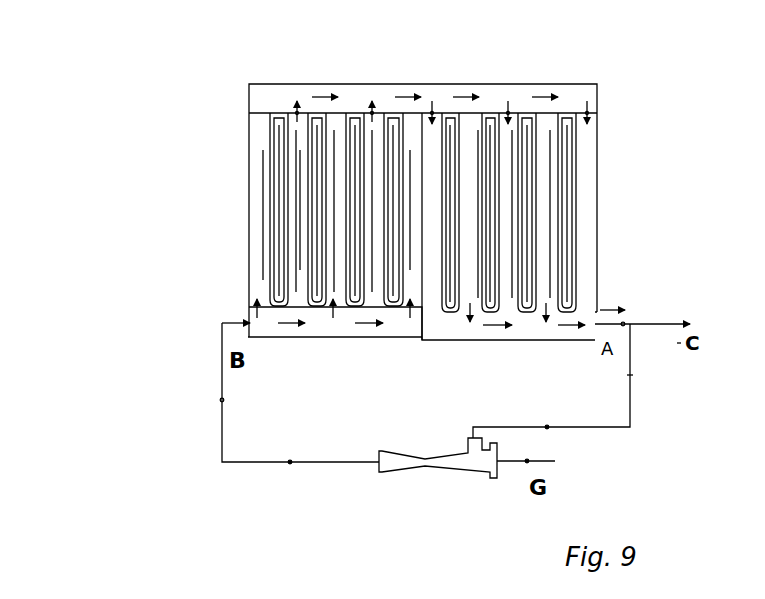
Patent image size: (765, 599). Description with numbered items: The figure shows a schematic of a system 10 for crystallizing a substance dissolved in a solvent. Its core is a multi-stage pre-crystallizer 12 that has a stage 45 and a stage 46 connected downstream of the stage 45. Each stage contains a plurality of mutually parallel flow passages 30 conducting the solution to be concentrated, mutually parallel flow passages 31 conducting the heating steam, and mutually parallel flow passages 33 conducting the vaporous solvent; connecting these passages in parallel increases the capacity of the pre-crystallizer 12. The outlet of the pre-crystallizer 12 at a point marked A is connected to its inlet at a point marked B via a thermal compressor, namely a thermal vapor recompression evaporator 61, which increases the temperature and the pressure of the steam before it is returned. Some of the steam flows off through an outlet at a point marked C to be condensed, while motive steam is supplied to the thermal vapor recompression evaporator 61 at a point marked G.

The system 10 is at (92, 125).
The pre-crystallizer 12 is at (598, 180).
The flow passages 30 is at (378, 178).
The flow passages 31 is at (410, 197).
The flow passages 33 is at (370, 215).
The stage 45 is at (322, 82).
The stage 46 is at (498, 82).
The thermal vapor recompression evaporator 61 is at (428, 474).